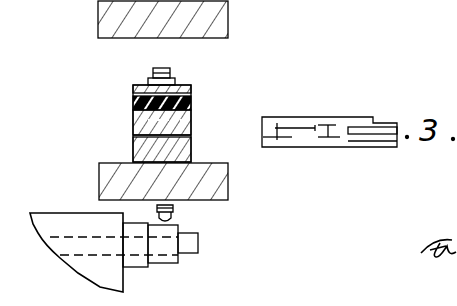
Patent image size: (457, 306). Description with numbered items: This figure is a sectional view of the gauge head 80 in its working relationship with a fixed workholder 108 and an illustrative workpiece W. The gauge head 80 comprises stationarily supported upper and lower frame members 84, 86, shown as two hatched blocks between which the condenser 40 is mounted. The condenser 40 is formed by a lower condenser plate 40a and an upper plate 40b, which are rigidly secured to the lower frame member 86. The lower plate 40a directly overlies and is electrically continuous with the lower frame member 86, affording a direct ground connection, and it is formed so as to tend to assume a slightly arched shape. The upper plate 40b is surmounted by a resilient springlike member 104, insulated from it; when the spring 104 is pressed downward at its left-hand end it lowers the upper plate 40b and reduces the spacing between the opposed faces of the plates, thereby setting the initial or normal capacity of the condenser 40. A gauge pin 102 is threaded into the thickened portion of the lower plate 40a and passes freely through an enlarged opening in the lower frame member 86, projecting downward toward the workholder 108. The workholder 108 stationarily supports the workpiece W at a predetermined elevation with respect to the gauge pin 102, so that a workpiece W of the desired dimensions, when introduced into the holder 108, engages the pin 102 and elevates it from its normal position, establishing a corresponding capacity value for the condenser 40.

The upper frame member 84 is at (227, 23).
The lower frame member 86 is at (225, 183).
The resilient springlike member 104 is at (192, 89).
The gauge head 80 is at (130, 100).
The upper plate 40b is at (192, 126).
The lower condenser plate 40a is at (192, 147).
The condenser 40 is at (130, 150).
The gauge pin 102 is at (168, 212).
The workholder 108 is at (62, 218).
The workpiece W is at (167, 265).